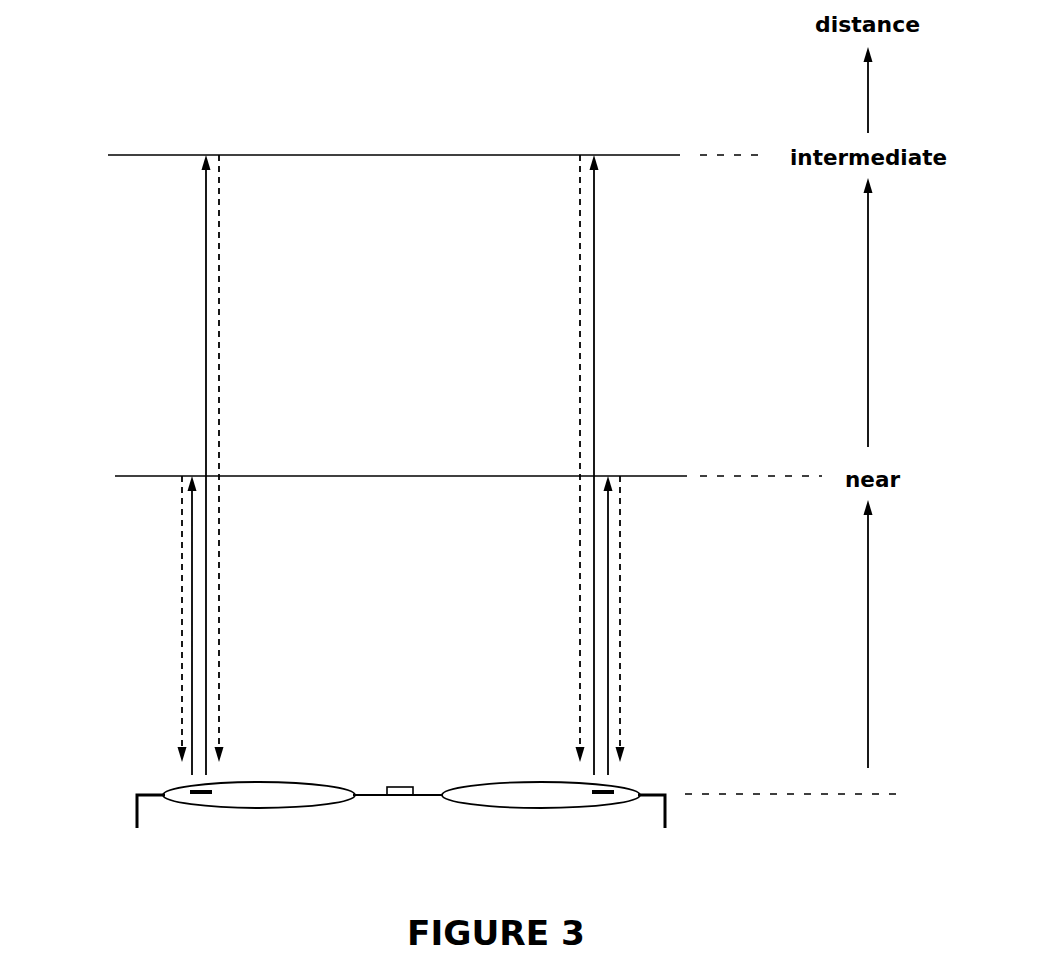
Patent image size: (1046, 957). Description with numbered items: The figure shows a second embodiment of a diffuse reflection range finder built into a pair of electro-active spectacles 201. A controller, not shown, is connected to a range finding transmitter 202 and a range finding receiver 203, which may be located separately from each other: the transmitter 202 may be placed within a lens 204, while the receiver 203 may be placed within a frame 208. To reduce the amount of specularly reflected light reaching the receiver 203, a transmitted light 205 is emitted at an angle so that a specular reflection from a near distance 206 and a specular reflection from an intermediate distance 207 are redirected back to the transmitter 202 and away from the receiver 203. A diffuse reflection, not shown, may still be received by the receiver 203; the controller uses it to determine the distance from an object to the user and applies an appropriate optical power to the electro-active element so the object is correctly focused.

The pair of electro-active spectacles 201 is at (163, 795).
The range finding transmitter 202 is at (208, 795).
The range finding receiver 203 is at (400, 787).
The lens 204 is at (248, 797).
The transmitted light 205 is at (206, 257).
The specular reflection from a near distance 206 is at (182, 680).
The specular reflection from an intermediate distance 207 is at (219, 358).
The frame 208 is at (365, 797).